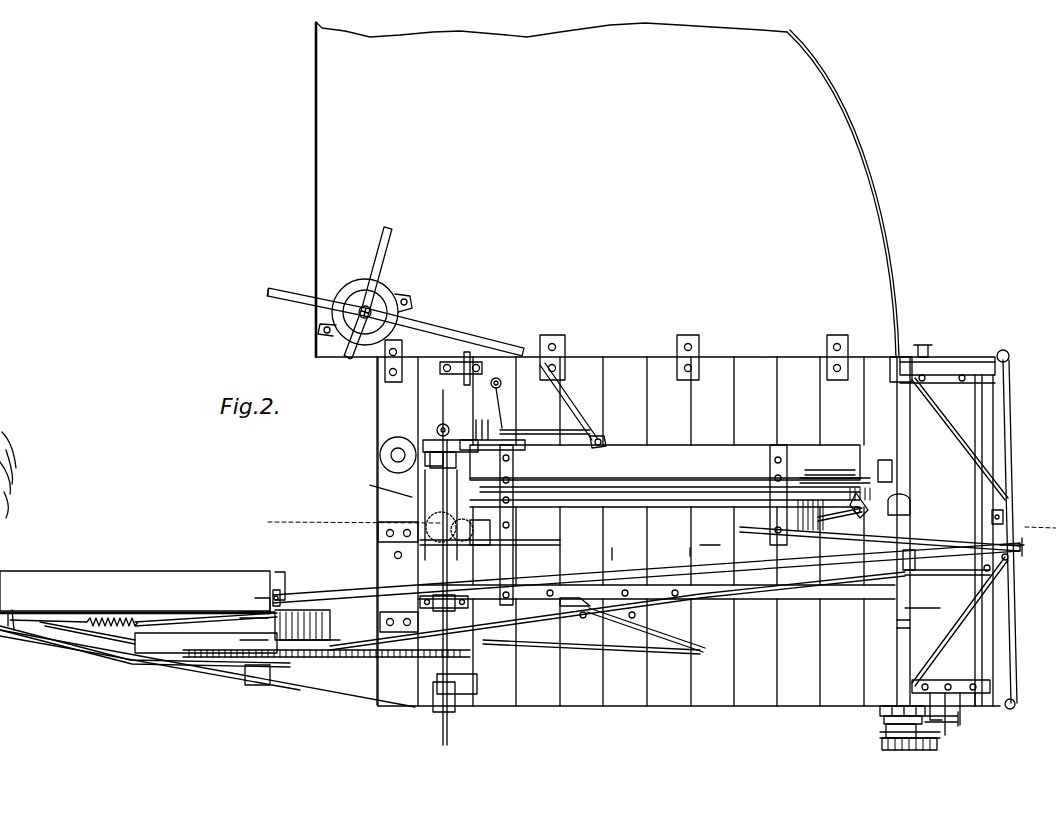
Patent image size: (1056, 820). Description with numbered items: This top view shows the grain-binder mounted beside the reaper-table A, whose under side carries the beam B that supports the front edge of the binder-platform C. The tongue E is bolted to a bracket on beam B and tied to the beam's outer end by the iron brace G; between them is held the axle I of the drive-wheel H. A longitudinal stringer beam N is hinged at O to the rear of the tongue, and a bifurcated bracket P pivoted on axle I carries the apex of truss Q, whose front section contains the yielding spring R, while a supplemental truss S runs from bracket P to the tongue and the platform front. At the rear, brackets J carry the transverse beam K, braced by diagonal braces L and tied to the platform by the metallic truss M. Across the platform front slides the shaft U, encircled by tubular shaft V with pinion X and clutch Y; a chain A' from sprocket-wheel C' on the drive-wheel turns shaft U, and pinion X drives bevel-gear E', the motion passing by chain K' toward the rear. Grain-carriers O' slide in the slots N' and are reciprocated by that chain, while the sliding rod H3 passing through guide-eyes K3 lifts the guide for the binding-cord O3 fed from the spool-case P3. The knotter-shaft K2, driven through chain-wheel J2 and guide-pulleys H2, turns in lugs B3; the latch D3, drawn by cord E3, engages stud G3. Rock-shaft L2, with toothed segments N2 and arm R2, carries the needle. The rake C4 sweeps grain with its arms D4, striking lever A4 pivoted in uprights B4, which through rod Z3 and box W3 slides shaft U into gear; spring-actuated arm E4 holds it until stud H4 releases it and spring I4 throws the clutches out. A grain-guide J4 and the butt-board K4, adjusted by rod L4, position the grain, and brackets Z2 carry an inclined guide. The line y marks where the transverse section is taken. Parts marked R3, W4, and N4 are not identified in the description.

The reaper-table A is at (608, 189).
The rake C4 is at (365, 307).
The rake-arms D4 is at (470, 336).
The vertical lever A4 is at (464, 358).
The uprights or supports B4 is at (450, 372).
The binder-platform C is at (689, 531).
The beam B is at (398, 531).
The beam R3 is at (665, 476).
The longitudinal parallel slots N' is at (617, 555).
The grain-carriers O' is at (670, 534).
The cord E3 is at (833, 486).
The clutch Y is at (808, 515).
The lug or stud G3 is at (870, 504).
The latch D3 is at (848, 517).
The lugs B3 is at (912, 514).
The pinion X is at (654, 520).
The section line y y is at (444, 567).
The transverse shaft U is at (457, 680).
The spool-case P3 is at (380, 456).
The binding-cord O3 is at (378, 488).
The box W3 is at (428, 438).
The tubular shaft V is at (426, 520).
The bevel-gear E' is at (397, 540).
The stud H4 is at (458, 532).
The bar W4 is at (520, 526).
The pivoted rod Z3 is at (485, 401).
The brackets Z2 is at (485, 416).
The spring-actuated arm E4 is at (500, 428).
The spring I4 is at (548, 402).
The grain-guide J4 is at (568, 420).
The longitudinal brace or stringer beam N is at (646, 574).
The hinge O is at (285, 580).
The metallic truss M is at (1012, 594).
The butt-board K4 is at (596, 636).
The rod L4 is at (591, 652).
The truss Q is at (540, 607).
The guide-eyes K3 is at (617, 544).
The longitudinally-sliding rod H3 is at (681, 542).
The drive-wheel H is at (710, 536).
The diagonal braces L is at (958, 436).
The transverse beam K is at (1019, 529).
The right frame N4 is at (932, 352).
The knotter-shaft K2 is at (897, 636).
The brackets or frames J is at (958, 690).
The toothed segments N2 is at (909, 753).
The chain-wheel J2 is at (880, 712).
The arm or lever R2 is at (886, 730).
The transverse rock-shaft L2 is at (894, 741).
The vertical guide-pulleys H2 is at (936, 732).
The tongue E is at (135, 592).
The bifurcated metallic bracket P is at (262, 610).
The chain K' is at (254, 624).
The supplemental truss S is at (172, 652).
The spring R is at (113, 615).
The iron brace G is at (145, 638).
The axle I is at (246, 680).
The sprocket-wheel C' is at (326, 663).
The chain A' is at (319, 656).